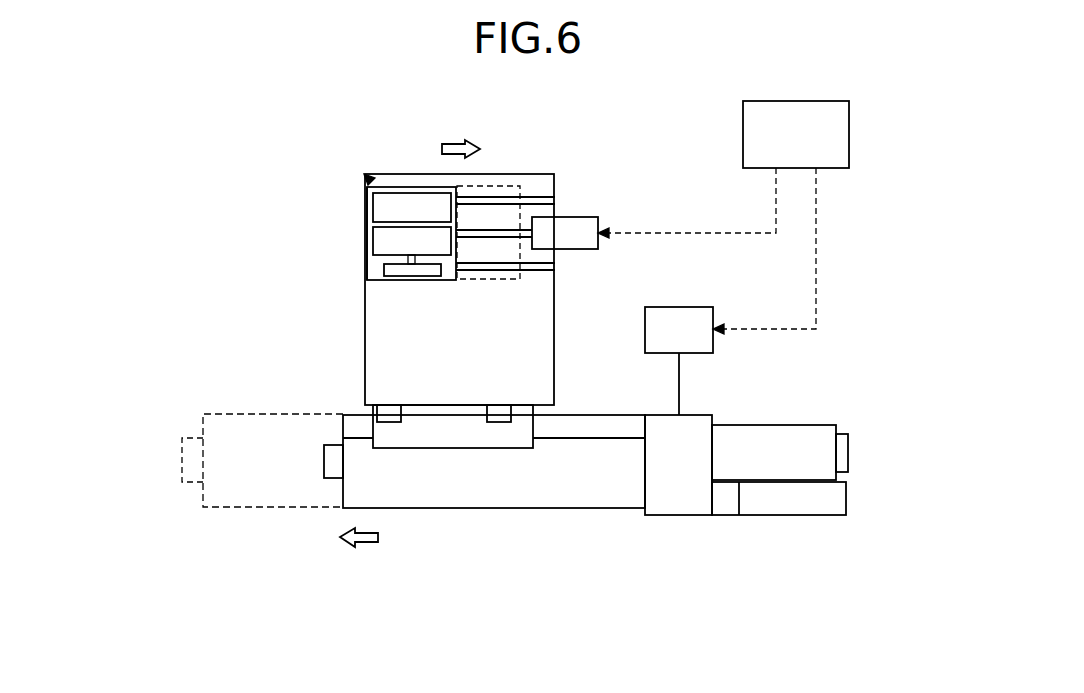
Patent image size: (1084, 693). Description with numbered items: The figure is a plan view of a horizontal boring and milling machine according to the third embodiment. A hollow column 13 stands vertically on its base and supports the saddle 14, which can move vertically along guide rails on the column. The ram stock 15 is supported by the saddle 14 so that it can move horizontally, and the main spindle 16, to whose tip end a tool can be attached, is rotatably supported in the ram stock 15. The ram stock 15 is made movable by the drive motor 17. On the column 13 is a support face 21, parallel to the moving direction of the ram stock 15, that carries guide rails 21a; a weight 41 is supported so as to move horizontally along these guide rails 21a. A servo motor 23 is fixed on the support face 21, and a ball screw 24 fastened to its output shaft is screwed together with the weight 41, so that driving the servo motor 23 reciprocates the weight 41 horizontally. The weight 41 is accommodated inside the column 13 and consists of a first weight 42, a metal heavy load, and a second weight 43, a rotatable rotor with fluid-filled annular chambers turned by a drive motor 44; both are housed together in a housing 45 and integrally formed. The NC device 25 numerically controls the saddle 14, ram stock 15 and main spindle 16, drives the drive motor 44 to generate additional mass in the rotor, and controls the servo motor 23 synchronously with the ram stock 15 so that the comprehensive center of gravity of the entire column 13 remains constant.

The column 13 is at (372, 390).
The saddle 14 is at (420, 437).
The ram stock 15 is at (570, 500).
The main spindle 16 is at (333, 472).
The drive motor 17 is at (697, 345).
The support face 21 is at (540, 177).
The guide rails 21a is at (555, 202).
The servo motor 23 is at (598, 223).
The ball screw 24 is at (470, 228).
The NC device 25 is at (850, 108).
The weight 41 is at (366, 178).
The first weight 42 is at (402, 198).
The second weight 43 is at (382, 242).
The drive motor 44 is at (410, 277).
The housing 45 is at (368, 213).